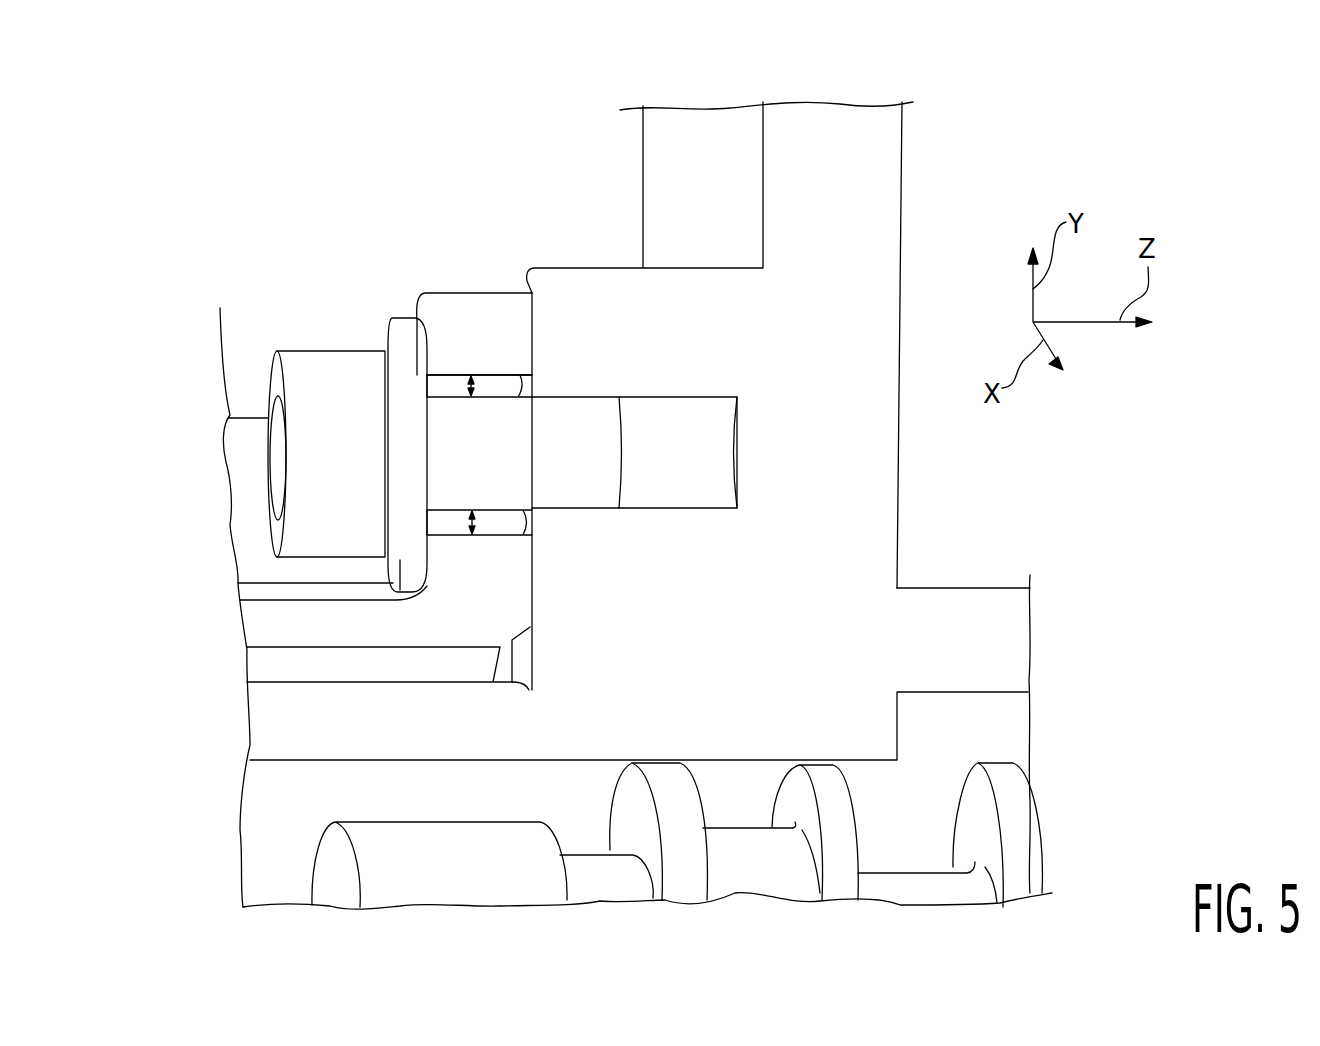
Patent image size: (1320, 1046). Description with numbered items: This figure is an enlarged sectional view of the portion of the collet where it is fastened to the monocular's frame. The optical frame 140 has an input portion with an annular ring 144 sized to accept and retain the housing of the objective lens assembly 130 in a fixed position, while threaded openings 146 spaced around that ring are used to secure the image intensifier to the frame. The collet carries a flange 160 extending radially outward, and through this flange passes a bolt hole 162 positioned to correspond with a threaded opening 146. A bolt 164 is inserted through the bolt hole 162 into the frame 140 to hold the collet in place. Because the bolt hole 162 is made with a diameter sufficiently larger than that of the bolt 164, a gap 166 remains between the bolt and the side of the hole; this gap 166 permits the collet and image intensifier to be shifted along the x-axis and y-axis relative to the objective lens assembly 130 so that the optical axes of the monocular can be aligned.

The objective lens assembly 130 is at (1037, 848).
The optical frame 140 is at (902, 167).
The annular ring 144 is at (957, 595).
The threaded opening 146 is at (647, 395).
The flange 160 is at (425, 293).
The bolt hole 162 is at (505, 393).
The bolt 164 is at (267, 443).
The gap 166 is at (469, 379).